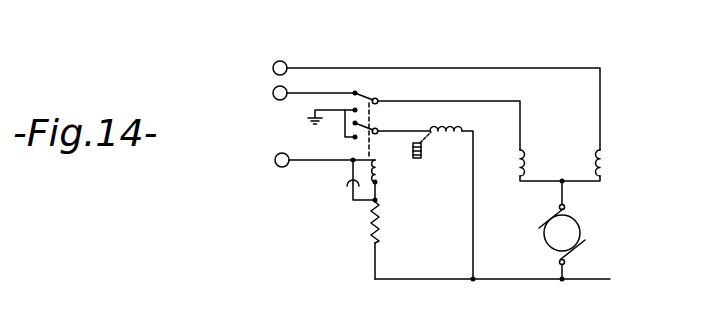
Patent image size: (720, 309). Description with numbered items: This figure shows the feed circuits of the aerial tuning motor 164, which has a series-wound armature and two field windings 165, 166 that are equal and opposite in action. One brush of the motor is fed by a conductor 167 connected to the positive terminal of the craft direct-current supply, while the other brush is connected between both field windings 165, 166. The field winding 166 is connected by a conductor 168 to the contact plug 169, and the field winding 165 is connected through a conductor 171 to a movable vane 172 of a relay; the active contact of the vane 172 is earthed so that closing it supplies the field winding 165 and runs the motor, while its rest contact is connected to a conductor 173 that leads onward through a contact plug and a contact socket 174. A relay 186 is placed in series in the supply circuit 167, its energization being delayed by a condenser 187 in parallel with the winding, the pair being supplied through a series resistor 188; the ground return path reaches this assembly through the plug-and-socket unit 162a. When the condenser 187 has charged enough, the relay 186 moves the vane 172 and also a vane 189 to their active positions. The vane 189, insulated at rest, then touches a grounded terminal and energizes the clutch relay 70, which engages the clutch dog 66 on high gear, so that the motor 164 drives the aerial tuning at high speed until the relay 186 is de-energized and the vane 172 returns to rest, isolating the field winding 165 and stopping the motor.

The contact plug 169 is at (273, 66).
The conductor 168 is at (423, 67).
The contact socket 174 is at (274, 96).
The conductor 173 is at (290, 95).
The movable vane 172 is at (365, 95).
The conductor 171 is at (423, 101).
The vane 189 is at (372, 125).
The clutch relay 70 is at (450, 137).
The clutch dog 66 is at (413, 160).
The plug-and-socket unit 162a is at (277, 167).
The relay 186 is at (379, 172).
The condenser 187 is at (351, 186).
The series resistor 188 is at (372, 232).
The conductor 167 is at (597, 279).
The field winding 165 is at (528, 158).
The field winding 166 is at (610, 165).
The aerial tuning motor 164 is at (579, 234).